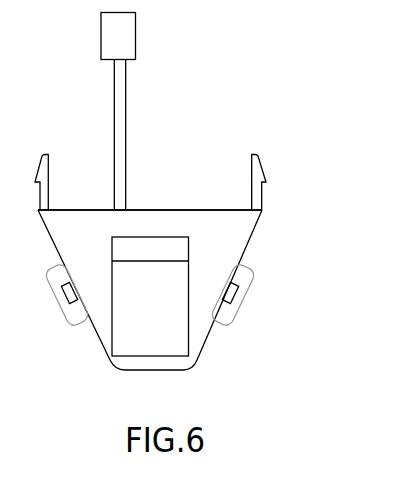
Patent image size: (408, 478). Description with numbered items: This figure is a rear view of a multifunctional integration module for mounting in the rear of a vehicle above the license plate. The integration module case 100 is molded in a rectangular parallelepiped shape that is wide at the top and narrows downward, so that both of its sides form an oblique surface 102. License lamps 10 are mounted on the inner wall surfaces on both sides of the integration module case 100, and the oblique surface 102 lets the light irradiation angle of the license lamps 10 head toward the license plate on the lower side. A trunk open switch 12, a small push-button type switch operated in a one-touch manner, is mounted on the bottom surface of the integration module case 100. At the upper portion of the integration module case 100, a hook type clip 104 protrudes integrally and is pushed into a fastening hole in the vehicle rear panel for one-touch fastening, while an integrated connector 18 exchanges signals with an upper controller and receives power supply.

The license lamp 10 is at (232, 292).
The trunk open switch 12 is at (112, 337).
The integrated connector 18 is at (136, 34).
The integration module case 100 is at (192, 212).
The oblique surface 102 is at (257, 226).
The hook type clip 104 is at (258, 169).